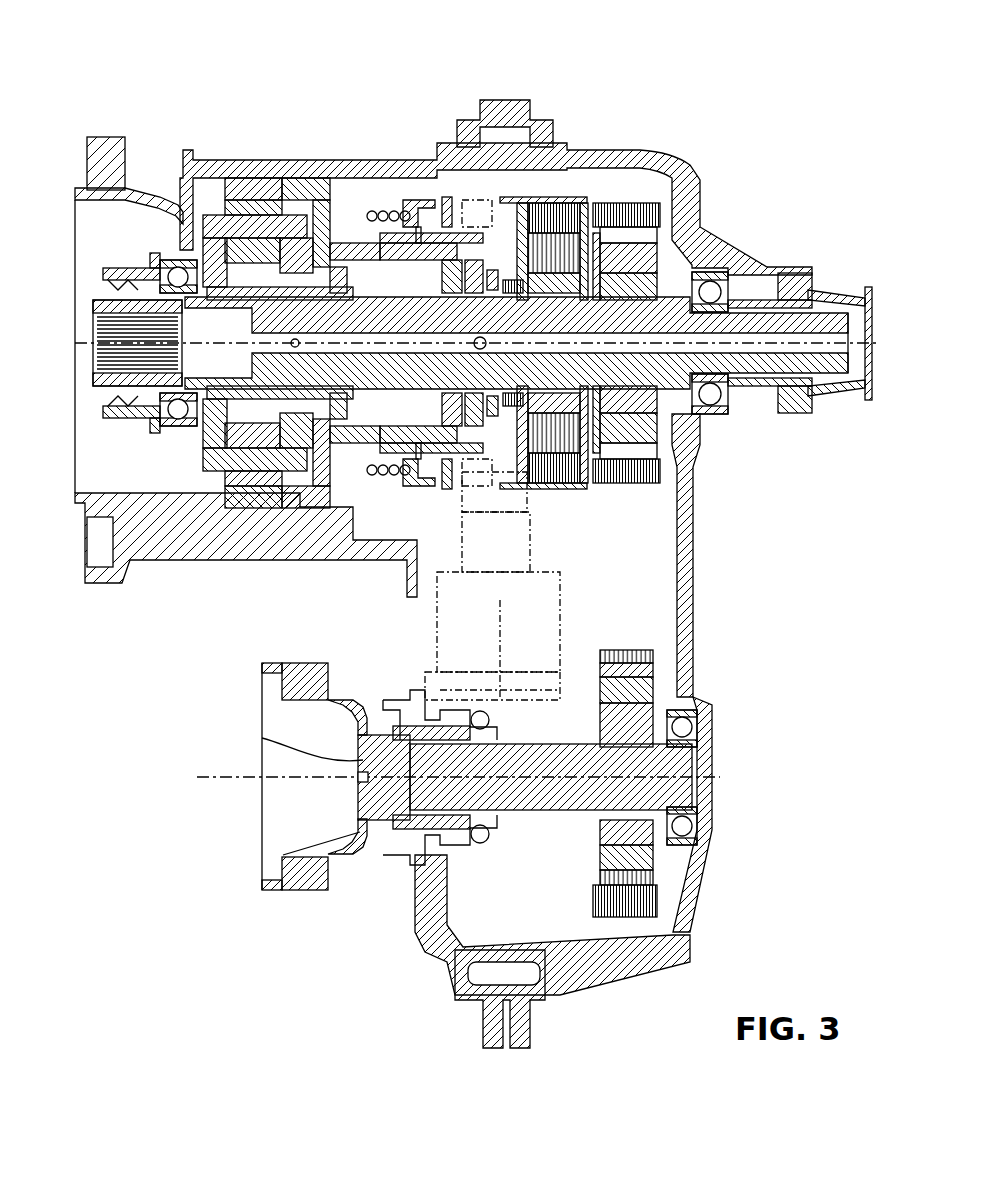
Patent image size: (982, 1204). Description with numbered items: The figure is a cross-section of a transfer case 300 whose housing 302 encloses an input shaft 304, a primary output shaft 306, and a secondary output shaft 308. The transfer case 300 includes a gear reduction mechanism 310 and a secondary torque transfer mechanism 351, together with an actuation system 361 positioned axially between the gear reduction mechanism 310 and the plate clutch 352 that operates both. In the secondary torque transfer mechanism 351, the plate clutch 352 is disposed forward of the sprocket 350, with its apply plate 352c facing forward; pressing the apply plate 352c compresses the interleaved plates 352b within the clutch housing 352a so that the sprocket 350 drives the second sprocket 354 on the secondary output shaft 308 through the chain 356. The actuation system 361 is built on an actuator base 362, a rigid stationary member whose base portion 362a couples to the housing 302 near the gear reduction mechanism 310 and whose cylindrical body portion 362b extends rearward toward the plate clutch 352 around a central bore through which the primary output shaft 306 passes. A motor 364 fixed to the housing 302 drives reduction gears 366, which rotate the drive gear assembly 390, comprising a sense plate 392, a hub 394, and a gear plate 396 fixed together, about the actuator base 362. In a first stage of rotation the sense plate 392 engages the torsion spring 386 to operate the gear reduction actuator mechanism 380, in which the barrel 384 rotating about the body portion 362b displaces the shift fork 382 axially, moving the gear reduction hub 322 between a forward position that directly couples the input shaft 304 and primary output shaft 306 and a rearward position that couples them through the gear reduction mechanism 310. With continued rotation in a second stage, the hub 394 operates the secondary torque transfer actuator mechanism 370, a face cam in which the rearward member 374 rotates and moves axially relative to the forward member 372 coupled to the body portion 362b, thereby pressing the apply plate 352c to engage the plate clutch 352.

The transfer case 300 is at (796, 110).
The housing 302 is at (690, 182).
The input shaft 304 is at (112, 365).
The primary output shaft 306 is at (742, 325).
The secondary output shaft 308 is at (262, 740).
The gear reduction mechanism 310 is at (215, 193).
The gear reduction hub 322 is at (112, 320).
The sprocket 350 is at (672, 166).
The secondary torque transfer mechanism 351 is at (580, 90).
The plate clutch 352 is at (710, 105).
The clutch housing 352a is at (550, 200).
The interleaved plates 352b is at (638, 210).
The apply plate 352c is at (508, 240).
The second sprocket 354 is at (642, 717).
The chain 356 is at (647, 910).
The actuation system 361 is at (405, 75).
The actuator base 362 is at (380, 95).
The base portion 362a is at (300, 178).
The body portion 362b is at (343, 200).
The motor 364 is at (232, 672).
The reduction gears 366 is at (480, 557).
The secondary torque transfer actuator mechanism 370 is at (127, 760).
The forward member 372 is at (445, 440).
The rearward member 374 is at (475, 455).
The gear reduction actuator mechanism 380 is at (90, 592).
The shift fork 382 is at (290, 432).
The barrel 384 is at (347, 420).
The torsion spring 386 is at (418, 197).
The drive gear assembly 390 is at (557, 90).
The sense plate 392 is at (450, 195).
The hub 394 is at (518, 125).
The gear plate 396 is at (478, 233).